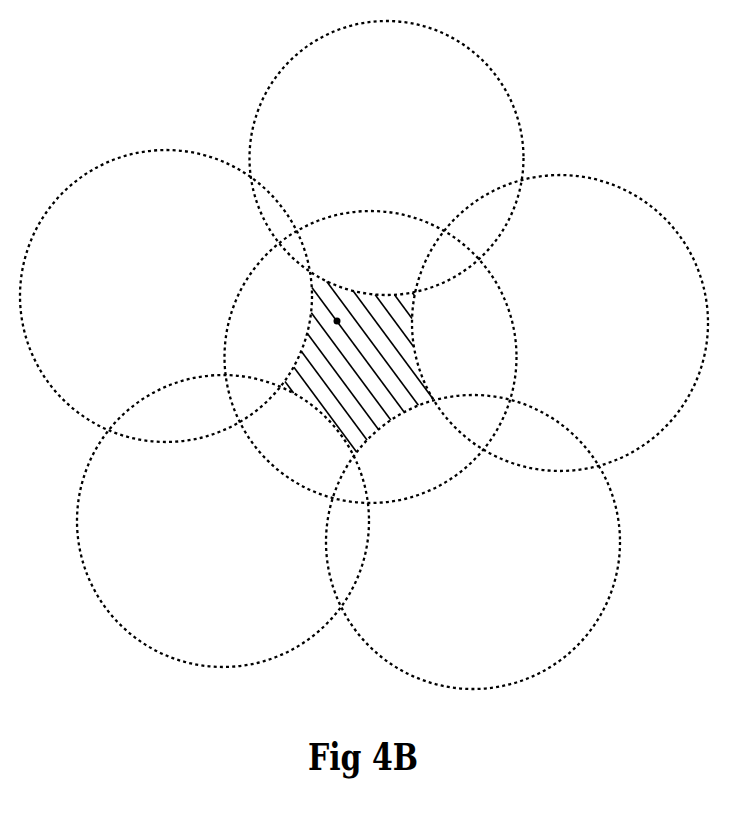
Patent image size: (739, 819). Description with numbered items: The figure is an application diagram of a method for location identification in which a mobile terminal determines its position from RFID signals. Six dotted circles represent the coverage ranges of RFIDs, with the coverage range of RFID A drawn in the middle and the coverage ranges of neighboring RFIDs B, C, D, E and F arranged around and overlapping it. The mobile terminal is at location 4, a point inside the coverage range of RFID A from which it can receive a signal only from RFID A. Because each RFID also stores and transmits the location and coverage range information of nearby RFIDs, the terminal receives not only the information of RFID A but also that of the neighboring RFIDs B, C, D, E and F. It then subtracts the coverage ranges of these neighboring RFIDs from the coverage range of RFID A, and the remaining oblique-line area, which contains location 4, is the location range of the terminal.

The location 4 is at (346, 321).
The RFID A is at (371, 357).
The neighboring RFID B is at (560, 323).
The neighboring RFID C is at (387, 158).
The neighboring RFID D is at (166, 296).
The neighboring RFID E is at (223, 521).
The neighboring RFID F is at (473, 542).